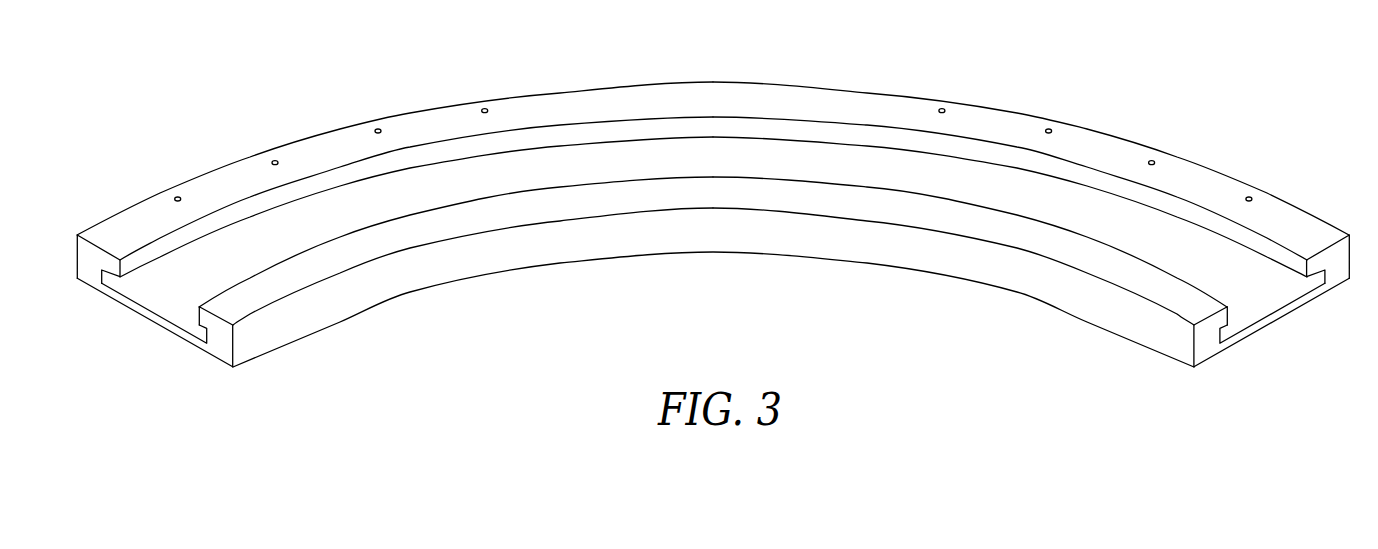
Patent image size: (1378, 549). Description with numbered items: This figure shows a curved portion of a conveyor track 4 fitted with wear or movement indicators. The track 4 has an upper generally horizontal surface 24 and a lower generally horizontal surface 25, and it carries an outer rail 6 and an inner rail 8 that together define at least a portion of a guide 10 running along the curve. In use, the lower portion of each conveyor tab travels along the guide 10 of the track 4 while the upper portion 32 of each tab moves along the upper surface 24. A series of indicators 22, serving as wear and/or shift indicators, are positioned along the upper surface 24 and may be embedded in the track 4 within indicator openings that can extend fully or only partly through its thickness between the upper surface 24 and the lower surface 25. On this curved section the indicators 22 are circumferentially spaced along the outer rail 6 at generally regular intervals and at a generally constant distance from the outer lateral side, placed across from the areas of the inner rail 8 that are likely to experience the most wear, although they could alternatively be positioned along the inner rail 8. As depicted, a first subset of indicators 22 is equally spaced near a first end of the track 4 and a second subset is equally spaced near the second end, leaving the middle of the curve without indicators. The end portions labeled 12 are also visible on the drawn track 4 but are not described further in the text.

The track 4 is at (1125, 367).
The outer rail 6 is at (115, 222).
The inner rail 8 is at (230, 307).
The guide 10 is at (1281, 322).
The base end portion 12 is at (147, 286).
The indicators 22 is at (944, 109).
The upper generally horizontal surface 24 is at (1298, 217).
The lower generally horizontal surface 25 is at (562, 263).
The upper portion 32 is at (1130, 272).